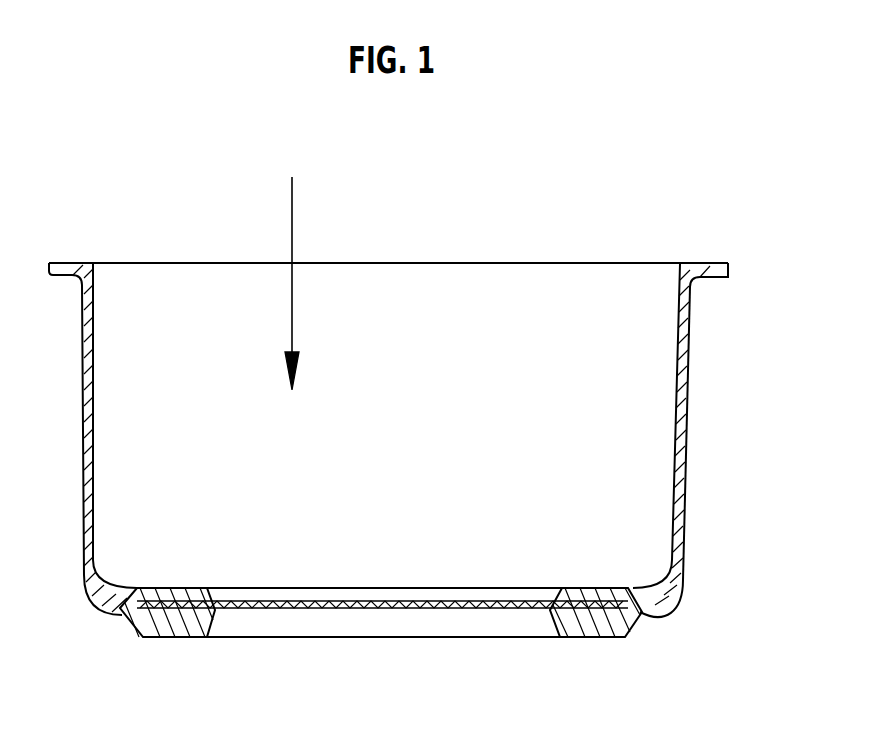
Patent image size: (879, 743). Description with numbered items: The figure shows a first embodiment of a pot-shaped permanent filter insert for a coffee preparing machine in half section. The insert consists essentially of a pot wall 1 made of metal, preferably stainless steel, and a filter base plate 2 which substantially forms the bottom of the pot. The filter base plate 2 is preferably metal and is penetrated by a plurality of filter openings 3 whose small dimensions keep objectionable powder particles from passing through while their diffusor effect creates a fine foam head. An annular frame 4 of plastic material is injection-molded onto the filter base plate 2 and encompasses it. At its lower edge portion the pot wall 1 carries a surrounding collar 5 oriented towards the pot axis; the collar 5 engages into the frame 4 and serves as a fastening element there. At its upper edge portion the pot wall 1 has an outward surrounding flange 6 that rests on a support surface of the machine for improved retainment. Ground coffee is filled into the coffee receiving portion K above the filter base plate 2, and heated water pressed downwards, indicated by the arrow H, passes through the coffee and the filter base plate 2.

The pot wall 1 is at (687, 512).
The filter base plate 2 is at (492, 610).
The filter openings 3 is at (388, 608).
The annular frame 4 is at (185, 638).
The collar 5 is at (667, 618).
The flange 6 is at (730, 277).
The heat direction H is at (269, 283).
The coffee receiving portion K is at (530, 286).